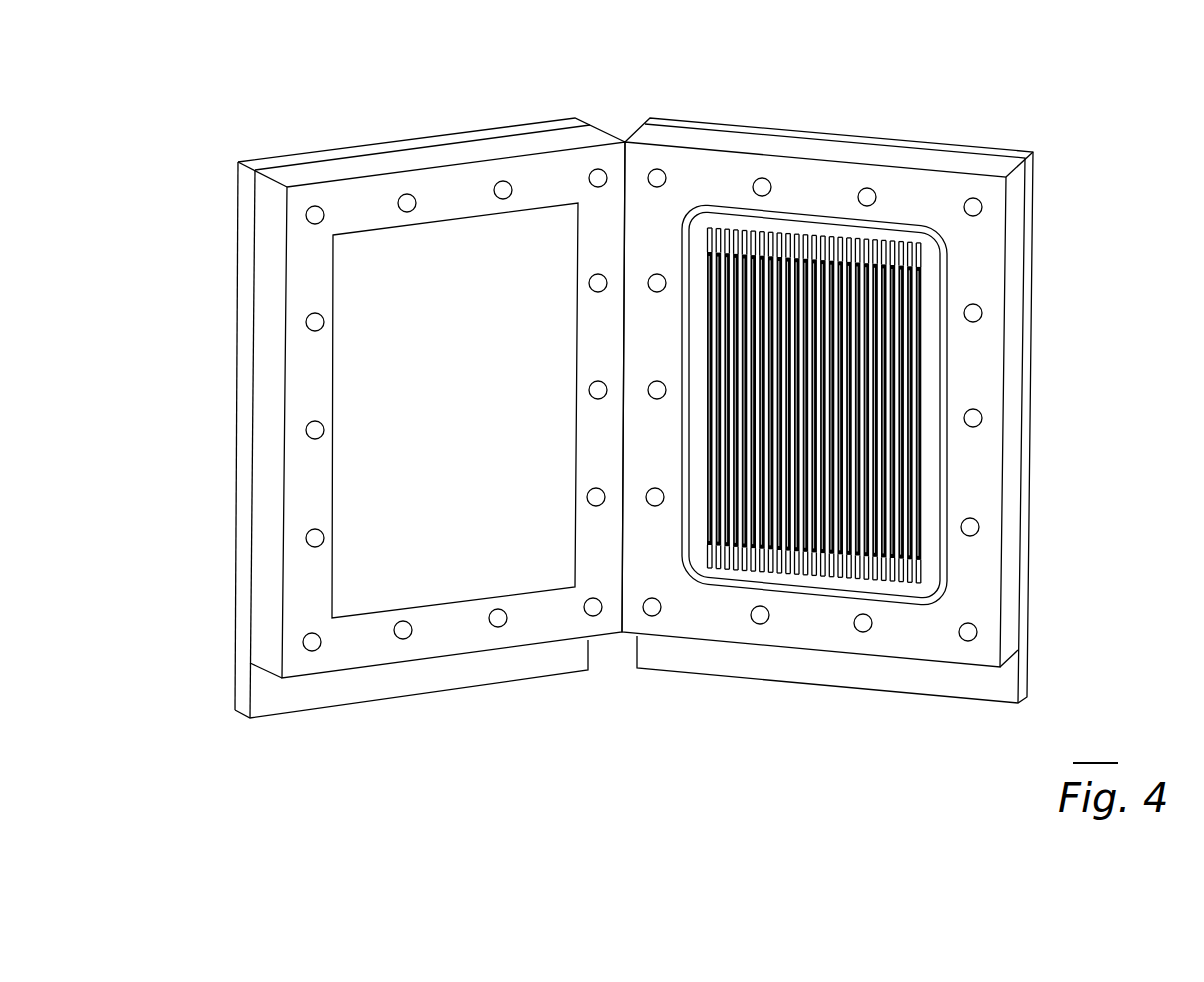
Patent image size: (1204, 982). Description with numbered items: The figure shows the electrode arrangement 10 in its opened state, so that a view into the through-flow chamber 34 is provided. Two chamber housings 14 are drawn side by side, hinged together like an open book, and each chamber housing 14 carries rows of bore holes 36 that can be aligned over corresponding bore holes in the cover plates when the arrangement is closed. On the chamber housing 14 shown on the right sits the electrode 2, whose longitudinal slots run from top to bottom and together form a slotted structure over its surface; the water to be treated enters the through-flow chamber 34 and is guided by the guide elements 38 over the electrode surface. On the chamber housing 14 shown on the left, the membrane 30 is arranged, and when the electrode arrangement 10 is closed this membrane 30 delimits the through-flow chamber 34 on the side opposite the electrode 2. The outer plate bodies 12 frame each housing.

The electrode arrangement 10 is at (792, 100).
The plate 12 is at (238, 162).
The chamber housing 14 is at (704, 382).
The electrode 2 is at (918, 435).
The membrane 30 is at (462, 604).
The through-flow chamber 34 is at (800, 243).
The bore holes 36 is at (978, 524).
The guide elements 38 is at (760, 566).